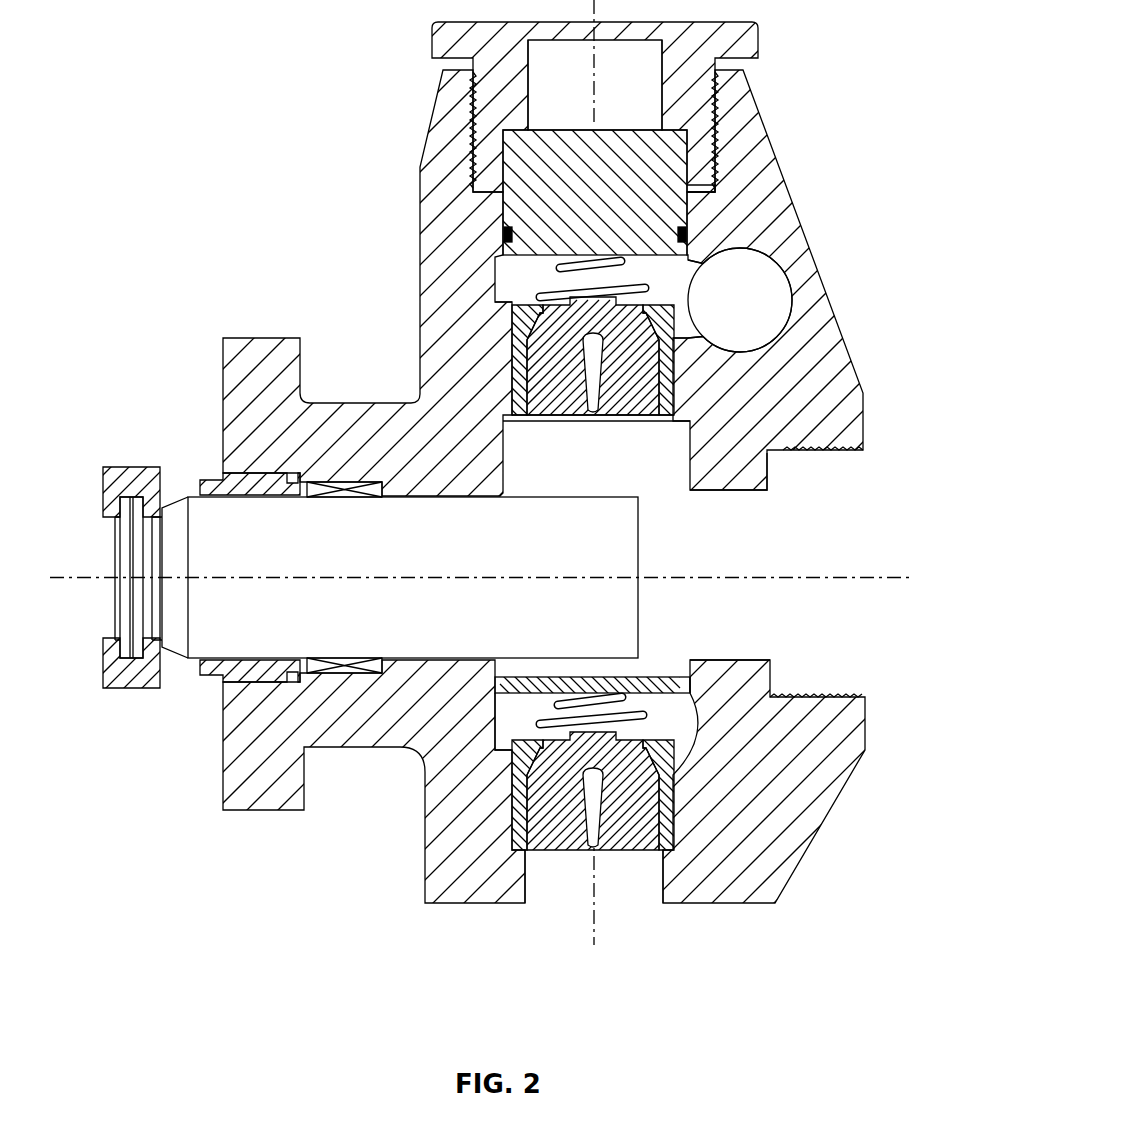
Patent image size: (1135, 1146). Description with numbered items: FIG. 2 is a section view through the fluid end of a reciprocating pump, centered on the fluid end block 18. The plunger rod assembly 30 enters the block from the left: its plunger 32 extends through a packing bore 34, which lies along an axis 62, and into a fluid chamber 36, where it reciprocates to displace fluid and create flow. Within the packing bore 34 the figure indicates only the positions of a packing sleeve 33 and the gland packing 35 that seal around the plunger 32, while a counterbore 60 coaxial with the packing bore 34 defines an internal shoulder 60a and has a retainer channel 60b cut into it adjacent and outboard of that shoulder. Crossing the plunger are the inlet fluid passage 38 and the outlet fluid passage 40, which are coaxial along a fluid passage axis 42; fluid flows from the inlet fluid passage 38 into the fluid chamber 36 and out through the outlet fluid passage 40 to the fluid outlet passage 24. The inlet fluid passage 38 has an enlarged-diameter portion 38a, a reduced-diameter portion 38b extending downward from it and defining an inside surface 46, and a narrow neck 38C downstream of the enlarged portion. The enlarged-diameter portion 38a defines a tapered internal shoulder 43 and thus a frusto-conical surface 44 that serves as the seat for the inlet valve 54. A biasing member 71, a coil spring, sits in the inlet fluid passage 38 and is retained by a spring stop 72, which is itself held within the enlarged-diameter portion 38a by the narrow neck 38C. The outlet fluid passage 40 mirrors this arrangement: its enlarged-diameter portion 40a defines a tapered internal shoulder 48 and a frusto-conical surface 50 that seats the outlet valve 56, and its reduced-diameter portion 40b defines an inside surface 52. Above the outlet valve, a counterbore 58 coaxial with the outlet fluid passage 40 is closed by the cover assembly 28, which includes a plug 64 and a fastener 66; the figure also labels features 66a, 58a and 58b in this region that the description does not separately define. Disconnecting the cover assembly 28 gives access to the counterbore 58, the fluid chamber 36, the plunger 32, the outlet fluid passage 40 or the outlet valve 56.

The cover assembly 28 is at (498, 495).
The fluid end block 18 is at (420, 205).
The fastener 66 is at (432, 45).
The cap threads 66a is at (473, 125).
The plug 64 is at (610, 130).
The counterbore 58 is at (503, 212).
The plug shoulder 58a is at (700, 185).
The plug threads 58b is at (716, 130).
The outlet fluid passage 40 is at (503, 287).
The enlarged-diameter portion 40a is at (497, 322).
The reduced-diameter portion 40b is at (674, 400).
The fluid outlet passage 24 is at (760, 297).
The frusto-conical surface 50 is at (680, 335).
The tapered internal shoulder 48 is at (500, 340).
The inside surface 52 is at (540, 408).
The outlet valve 56 is at (633, 408).
The fluid chamber 36 is at (610, 468).
The plunger 32 is at (390, 557).
The packing bore 34 is at (440, 500).
The plunger rod assembly 30 is at (130, 690).
The packing sleeve 33 is at (347, 662).
The packing 35 is at (347, 660).
The counterbore 60 is at (758, 493).
The internal shoulder 60a is at (772, 677).
The retainer channel 60b is at (830, 452).
The axis 62 is at (498, 549).
The inlet fluid passage 38 is at (507, 715).
The enlarged-diameter portion 38a is at (690, 720).
The reduced-diameter portion 38b is at (650, 890).
The narrow neck 38C is at (688, 668).
The spring stop 72 is at (567, 680).
The biasing member 71 is at (620, 685).
The tapered internal shoulder 43 is at (505, 755).
The frusto-conical surface 44 is at (674, 780).
The inlet valve 54 is at (607, 810).
The inside surface 46 is at (528, 890).
The fluid passage axis 42 is at (594, 925).